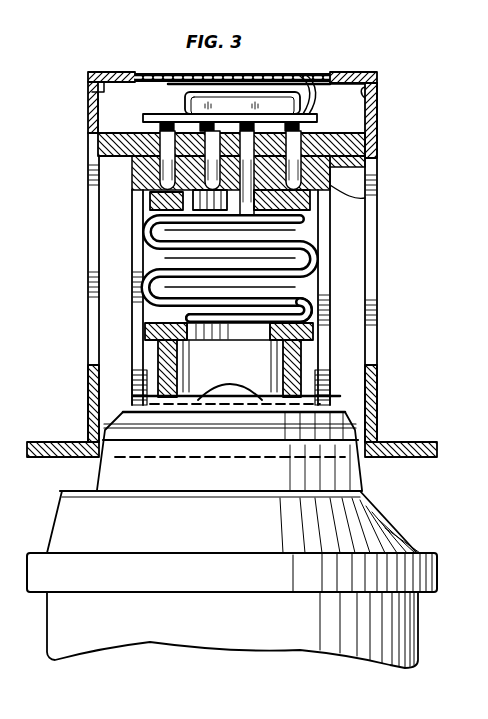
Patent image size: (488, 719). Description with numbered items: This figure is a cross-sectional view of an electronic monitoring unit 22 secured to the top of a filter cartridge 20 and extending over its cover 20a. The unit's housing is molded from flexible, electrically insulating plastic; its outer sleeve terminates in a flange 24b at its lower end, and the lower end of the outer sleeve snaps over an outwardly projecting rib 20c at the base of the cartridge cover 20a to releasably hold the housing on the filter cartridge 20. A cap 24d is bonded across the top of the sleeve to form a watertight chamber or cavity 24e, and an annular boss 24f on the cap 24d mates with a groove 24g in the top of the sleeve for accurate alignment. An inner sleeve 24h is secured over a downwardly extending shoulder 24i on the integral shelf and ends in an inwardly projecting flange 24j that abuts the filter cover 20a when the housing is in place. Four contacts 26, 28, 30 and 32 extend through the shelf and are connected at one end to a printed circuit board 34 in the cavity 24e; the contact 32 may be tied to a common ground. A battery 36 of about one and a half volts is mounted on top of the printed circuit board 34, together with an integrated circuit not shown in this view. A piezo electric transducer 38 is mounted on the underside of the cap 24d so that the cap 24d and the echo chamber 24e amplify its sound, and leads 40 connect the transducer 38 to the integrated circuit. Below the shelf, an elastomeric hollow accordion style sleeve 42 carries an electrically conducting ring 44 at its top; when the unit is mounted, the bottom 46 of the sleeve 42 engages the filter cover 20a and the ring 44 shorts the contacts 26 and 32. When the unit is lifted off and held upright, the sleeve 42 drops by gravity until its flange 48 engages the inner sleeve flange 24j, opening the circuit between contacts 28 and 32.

The filter cartridge 20 is at (228, 627).
The cover 20a is at (366, 405).
The outwardly projecting rib 20c is at (358, 468).
The electronic monitoring unit 22 is at (372, 57).
The flange 24b is at (48, 442).
The cap 24d is at (133, 72).
The chamber or cavity 24e is at (345, 122).
The annular boss 24f is at (379, 75).
The groove 24g is at (368, 100).
The inner sleeve 24h is at (345, 266).
The downwardly extending shoulder 24i is at (372, 172).
The inwardly projecting flange 24j is at (152, 400).
The contact 26 is at (143, 186).
The contact 28 is at (98, 140).
The contact 30 is at (282, 228).
The contact 32 is at (372, 200).
The printed circuit board 34 is at (143, 118).
The battery 36 is at (246, 99).
The piezo electric transducer 38 is at (214, 82).
The leads 40 is at (306, 76).
The accordion style sleeve 42 is at (312, 310).
The electrically conducting ring 44 is at (150, 204).
The bottom 46 is at (318, 383).
The flange 48 is at (305, 338).